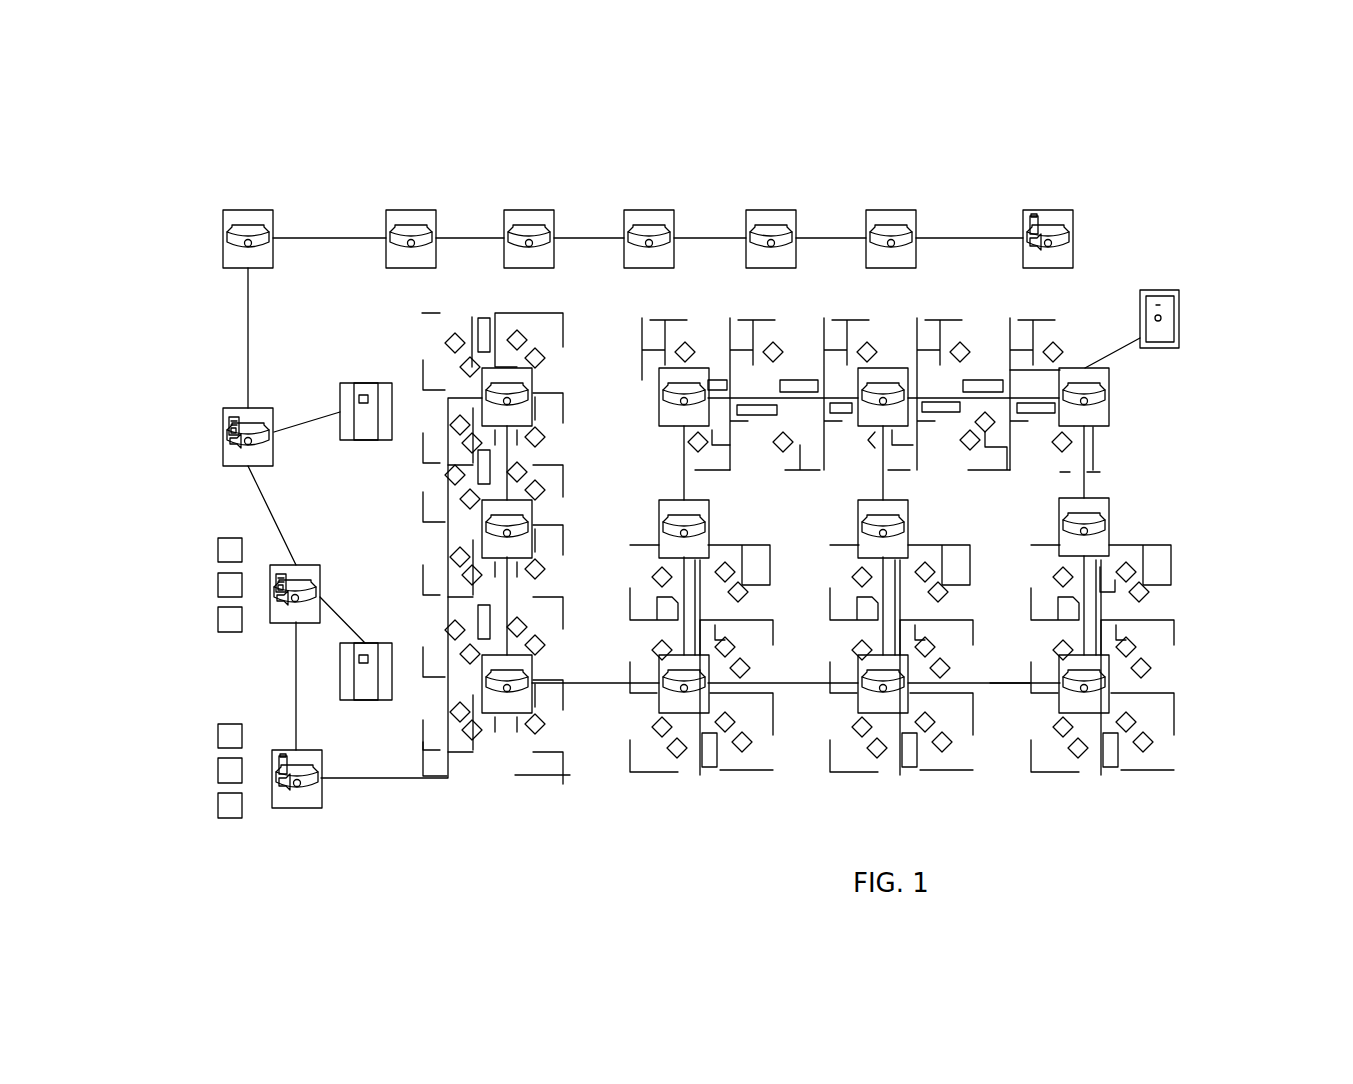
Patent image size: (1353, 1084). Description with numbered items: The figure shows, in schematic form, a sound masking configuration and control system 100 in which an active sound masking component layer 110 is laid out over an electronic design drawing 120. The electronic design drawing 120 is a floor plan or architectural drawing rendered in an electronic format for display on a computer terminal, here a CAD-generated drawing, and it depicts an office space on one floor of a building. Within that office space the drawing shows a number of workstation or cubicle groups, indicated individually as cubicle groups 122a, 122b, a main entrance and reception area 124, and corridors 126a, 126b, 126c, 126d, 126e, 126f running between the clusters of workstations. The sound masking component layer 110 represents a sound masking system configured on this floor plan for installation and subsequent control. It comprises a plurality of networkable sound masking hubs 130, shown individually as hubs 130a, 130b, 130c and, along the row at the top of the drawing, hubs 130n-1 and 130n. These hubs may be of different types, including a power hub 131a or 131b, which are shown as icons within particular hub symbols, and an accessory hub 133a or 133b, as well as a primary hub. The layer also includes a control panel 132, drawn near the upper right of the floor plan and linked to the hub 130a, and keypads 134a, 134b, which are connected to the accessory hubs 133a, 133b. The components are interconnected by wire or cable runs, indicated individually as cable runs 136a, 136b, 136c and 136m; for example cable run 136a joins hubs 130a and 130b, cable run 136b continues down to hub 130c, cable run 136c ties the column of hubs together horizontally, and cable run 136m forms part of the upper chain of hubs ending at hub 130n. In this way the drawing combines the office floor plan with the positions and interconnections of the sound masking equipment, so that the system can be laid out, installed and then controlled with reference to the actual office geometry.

The sound masking configuration and control system 100 is at (1165, 176).
The active sound masking component layer 110 is at (1015, 181).
The electronic design drawing 120 is at (940, 537).
The workstation or cubicle group 122a is at (527, 786).
The workstation or cubicle group 122b is at (1160, 590).
The main entrance and reception area 124 is at (213, 690).
The corridor 126a is at (373, 514).
The corridor 126b is at (682, 310).
The corridor 126c is at (632, 483).
The corridor 126d is at (818, 529).
The corridor 126e is at (816, 682).
The corridor 126f is at (1028, 645).
The networkable sound masking hub 130 is at (322, 802).
The networkable sound masking hub 130a is at (1110, 412).
The networkable sound masking hub 130b is at (1090, 498).
The networkable sound masking hub 130c is at (1110, 683).
The networkable sound masking hub 130n is at (1074, 254).
The networkable sound masking hub 130n-1 is at (893, 210).
The power hub 131a is at (285, 810).
The power hub 131b is at (1020, 228).
The control panel 132 is at (1182, 330).
The accessory hub 133a is at (224, 446).
The accessory hub 133b is at (272, 598).
The keypad 134a is at (372, 643).
The keypad 134b is at (365, 383).
The wire or cable run 136a is at (1100, 460).
The wire or cable run 136b is at (1085, 612).
The wire or cable run 136c is at (1012, 683).
The wire or cable run 136m is at (948, 240).